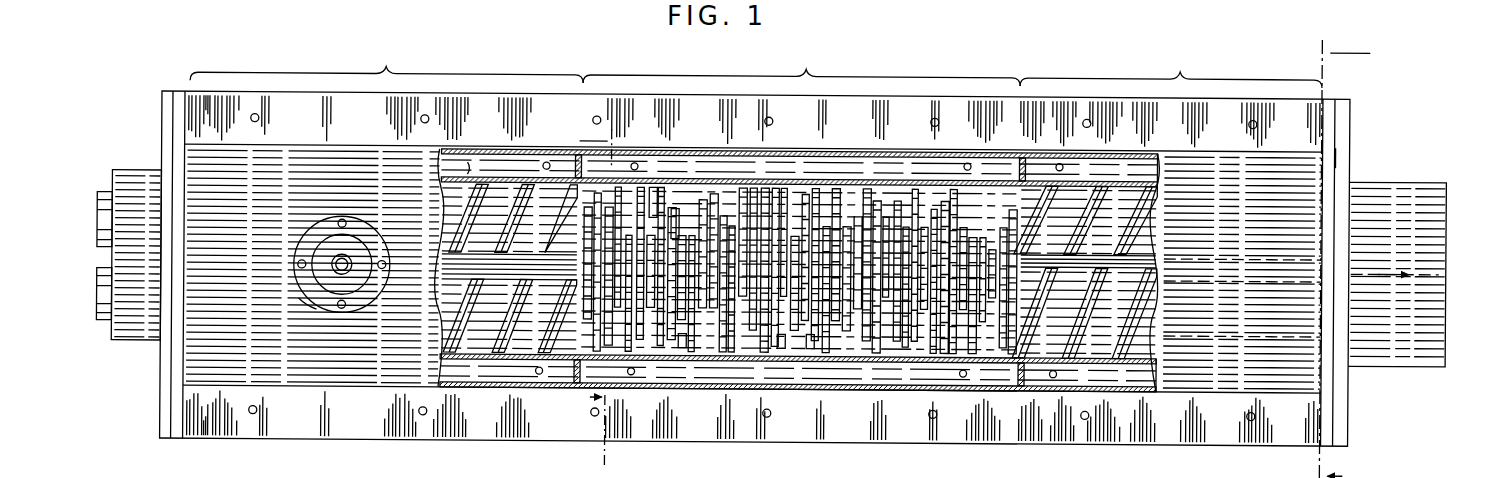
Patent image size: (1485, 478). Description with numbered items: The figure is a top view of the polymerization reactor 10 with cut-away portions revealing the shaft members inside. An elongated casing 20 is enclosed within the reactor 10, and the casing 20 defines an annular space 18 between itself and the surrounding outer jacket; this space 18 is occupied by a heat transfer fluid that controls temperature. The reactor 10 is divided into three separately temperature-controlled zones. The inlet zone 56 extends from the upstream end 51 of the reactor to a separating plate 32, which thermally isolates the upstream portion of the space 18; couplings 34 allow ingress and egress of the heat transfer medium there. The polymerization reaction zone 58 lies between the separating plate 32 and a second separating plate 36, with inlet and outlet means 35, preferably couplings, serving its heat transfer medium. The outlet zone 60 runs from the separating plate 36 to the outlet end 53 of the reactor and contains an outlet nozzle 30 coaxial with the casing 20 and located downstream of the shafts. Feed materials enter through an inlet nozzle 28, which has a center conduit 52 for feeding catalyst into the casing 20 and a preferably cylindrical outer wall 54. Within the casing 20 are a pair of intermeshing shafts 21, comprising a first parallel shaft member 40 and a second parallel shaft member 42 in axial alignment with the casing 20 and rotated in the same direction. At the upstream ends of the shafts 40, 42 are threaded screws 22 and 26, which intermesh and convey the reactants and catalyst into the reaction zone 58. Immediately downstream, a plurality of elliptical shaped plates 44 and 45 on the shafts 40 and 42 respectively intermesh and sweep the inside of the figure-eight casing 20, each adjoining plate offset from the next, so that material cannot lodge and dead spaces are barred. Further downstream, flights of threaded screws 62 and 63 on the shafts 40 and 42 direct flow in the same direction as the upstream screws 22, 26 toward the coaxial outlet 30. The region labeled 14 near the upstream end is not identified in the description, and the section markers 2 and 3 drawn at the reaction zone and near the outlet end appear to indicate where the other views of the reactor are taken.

The polymerization reactor 10 is at (157, 120).
The drive housing 14 is at (224, 266).
The annular space 18 is at (472, 166).
The elongated casing 20 is at (555, 360).
The pair of intermeshing shafts 21 is at (683, 337).
The threaded screw 22 is at (455, 223).
The threaded screw 26 is at (440, 298).
The inlet nozzle 28 is at (313, 312).
The outlet nozzle 30 is at (1447, 173).
The separating plate 32 is at (553, 381).
The couplings 34 is at (546, 152).
The inlet and outlet means 35 is at (970, 157).
The separating plate 36 is at (1012, 368).
The first parallel shaft member 40 is at (1340, 150).
The second parallel shaft member 42 is at (1247, 333).
The elliptical shaped plates 44 is at (675, 212).
The elliptical plates 45 is at (810, 341).
The upstream end of the reactor 51 is at (160, 400).
The center conduit 52 is at (345, 257).
The outlet end of the reactor 53 is at (1352, 110).
The outer wall 54 is at (326, 252).
The inlet zone 56 is at (385, 252).
The polymerization reaction zone 58 is at (800, 255).
The outlet zone 60 is at (1166, 259).
The flight of threaded screws 62 is at (1105, 198).
The flight of threaded screws 63 is at (1083, 210).
The section line 2 is at (585, 284).
The section line 3 is at (1350, 259).